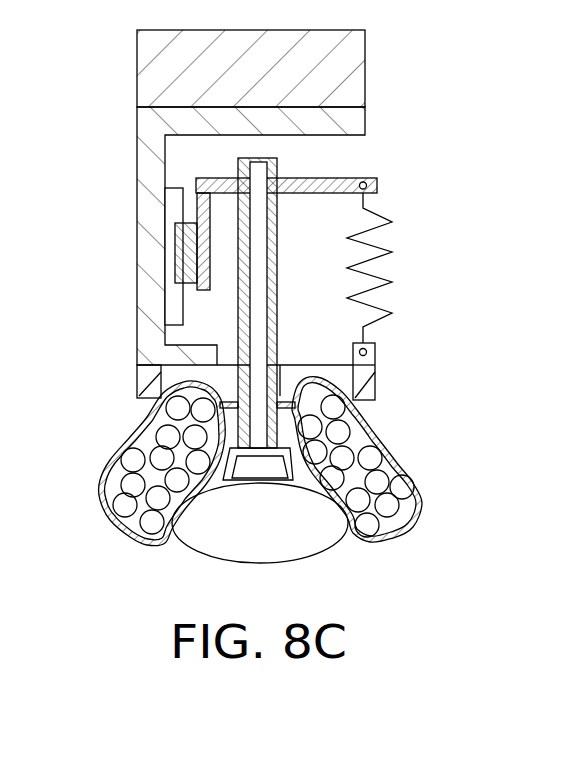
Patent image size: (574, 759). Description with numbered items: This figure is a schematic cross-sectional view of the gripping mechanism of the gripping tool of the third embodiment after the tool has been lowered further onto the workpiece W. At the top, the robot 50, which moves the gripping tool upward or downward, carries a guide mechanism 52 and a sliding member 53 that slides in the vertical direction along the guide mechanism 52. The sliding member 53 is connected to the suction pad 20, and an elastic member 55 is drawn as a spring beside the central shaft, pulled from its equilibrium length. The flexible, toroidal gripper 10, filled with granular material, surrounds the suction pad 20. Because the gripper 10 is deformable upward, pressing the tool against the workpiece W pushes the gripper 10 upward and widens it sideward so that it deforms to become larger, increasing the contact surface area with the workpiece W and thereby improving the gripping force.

The robot 50 is at (147, 61).
The guide mechanism 52 is at (178, 208).
The sliding member 53 is at (187, 263).
The elastic member 55 is at (392, 250).
The gripper 10 is at (387, 448).
The suction pad 20 is at (233, 489).
The workpiece W is at (323, 548).